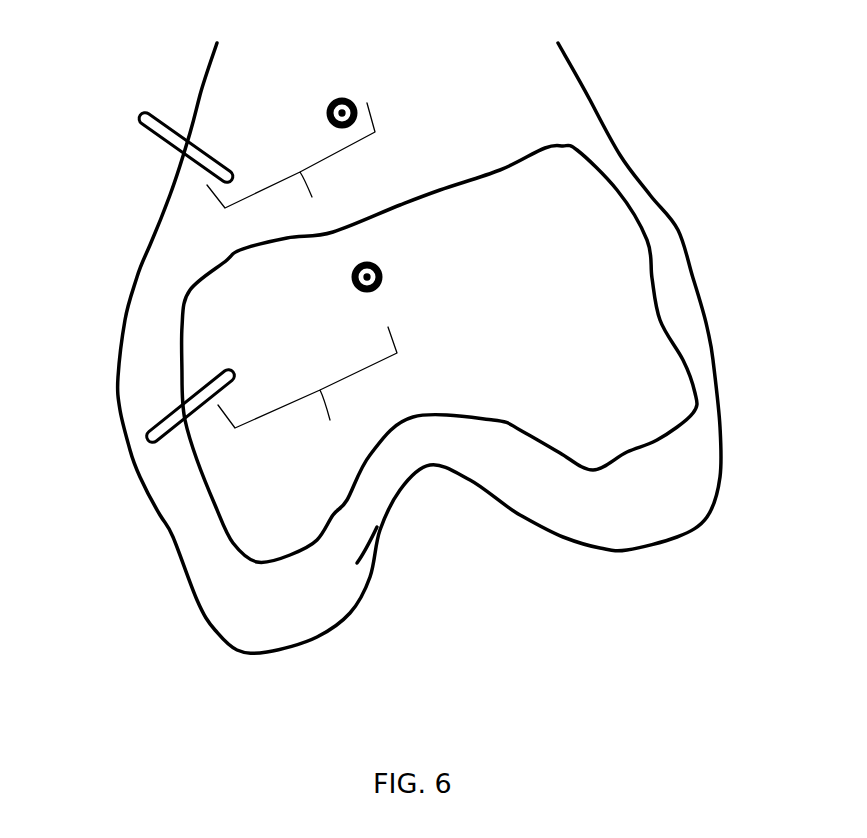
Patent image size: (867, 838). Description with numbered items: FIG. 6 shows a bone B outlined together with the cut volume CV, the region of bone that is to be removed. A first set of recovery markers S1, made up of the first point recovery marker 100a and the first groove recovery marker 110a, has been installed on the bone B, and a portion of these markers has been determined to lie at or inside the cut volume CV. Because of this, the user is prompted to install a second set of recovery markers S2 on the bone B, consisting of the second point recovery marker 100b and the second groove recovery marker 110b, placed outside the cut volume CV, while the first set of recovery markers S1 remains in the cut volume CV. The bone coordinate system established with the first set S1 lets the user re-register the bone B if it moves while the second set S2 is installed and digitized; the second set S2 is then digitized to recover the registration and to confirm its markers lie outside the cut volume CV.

The bone B is at (454, 542).
The cut volume CV is at (685, 360).
The first groove recovery marker 110a is at (145, 440).
The second groove recovery marker 110b is at (147, 128).
The first point recovery marker 100a is at (382, 268).
The second point recovery marker 100b is at (350, 97).
The first set of recovery markers S1 is at (307, 389).
The second set of recovery markers S2 is at (291, 160).